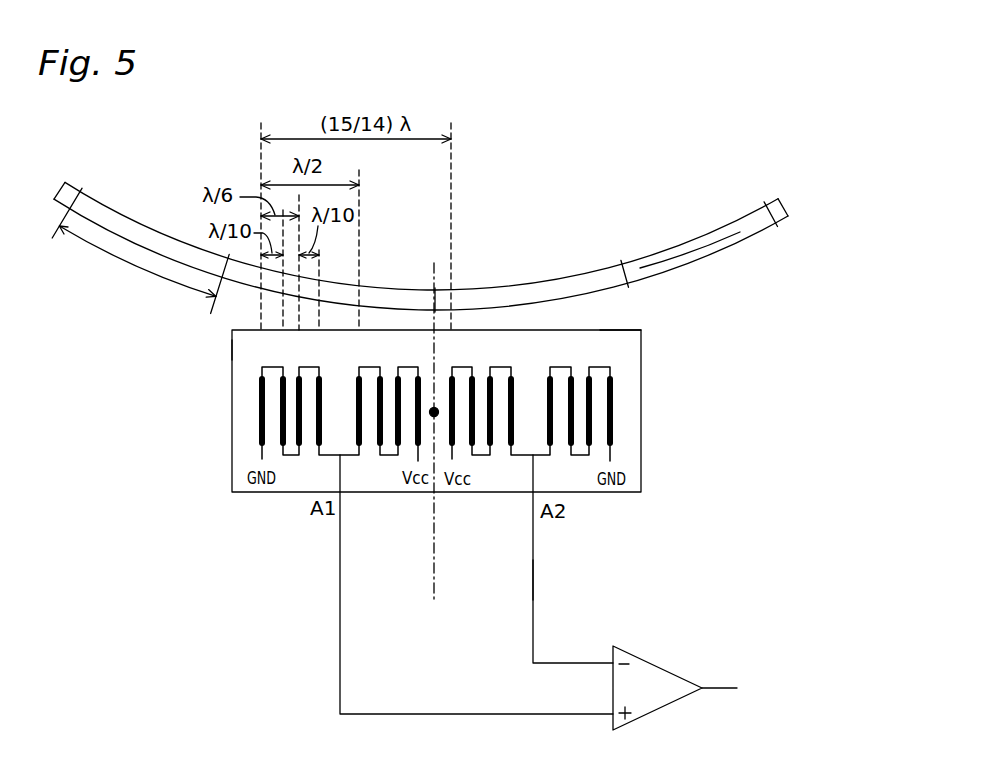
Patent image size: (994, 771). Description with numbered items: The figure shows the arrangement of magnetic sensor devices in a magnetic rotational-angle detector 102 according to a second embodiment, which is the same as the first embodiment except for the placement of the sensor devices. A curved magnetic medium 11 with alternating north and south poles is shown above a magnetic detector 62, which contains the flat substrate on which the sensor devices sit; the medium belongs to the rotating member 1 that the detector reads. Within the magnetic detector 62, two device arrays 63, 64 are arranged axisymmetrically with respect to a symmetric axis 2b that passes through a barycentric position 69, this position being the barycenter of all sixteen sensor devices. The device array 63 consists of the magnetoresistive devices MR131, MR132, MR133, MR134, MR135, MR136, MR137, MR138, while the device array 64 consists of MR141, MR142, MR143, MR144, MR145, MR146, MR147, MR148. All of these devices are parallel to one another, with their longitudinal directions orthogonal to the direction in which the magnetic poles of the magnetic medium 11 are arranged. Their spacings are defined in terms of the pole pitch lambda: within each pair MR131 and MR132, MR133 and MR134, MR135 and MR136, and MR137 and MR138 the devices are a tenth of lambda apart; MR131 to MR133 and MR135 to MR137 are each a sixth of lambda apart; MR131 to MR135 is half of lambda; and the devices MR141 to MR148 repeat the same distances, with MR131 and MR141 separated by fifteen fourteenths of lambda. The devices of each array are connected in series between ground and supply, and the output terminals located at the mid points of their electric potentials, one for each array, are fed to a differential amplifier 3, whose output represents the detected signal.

The magnetic scale (magnet) 1 is at (742, 246).
The symmetric axis 2b is at (434, 600).
The differential amplifier 3 is at (687, 702).
The magnetic medium 11 is at (702, 247).
The magnetic detector 62 is at (648, 348).
The device array 63 is at (238, 348).
The device array 64 is at (623, 333).
The barycentric position 69 is at (433, 407).
The magnetic rotational-angle detector 102 is at (720, 540).
The MR (magnetic sensor device) MR131 is at (262, 432).
The MR (magnetic sensor device) MR132 is at (300, 407).
The MR (magnetic sensor device) MR133 is at (300, 389).
The MR (magnetic sensor device) MR134 is at (300, 382).
The MR (magnetic sensor device) MR135 is at (358, 443).
The MR (magnetic sensor device) MR136 is at (380, 443).
The MR (magnetic sensor device) MR137 is at (397, 443).
The MR (magnetic sensor device) MR138 is at (418, 445).
The MR (magnetic sensor device) MR141 is at (453, 448).
The MR (magnetic sensor device) MR142 is at (472, 447).
The MR (magnetic sensor device) MR143 is at (490, 443).
The MR (magnetic sensor device) MR144 is at (512, 443).
The MR (magnetic sensor device) MR145 is at (552, 388).
The MR (magnetic sensor device) MR146 is at (573, 393).
The MR (magnetic sensor device) MR147 is at (589, 418).
The MR (magnetic sensor device) MR148 is at (611, 440).